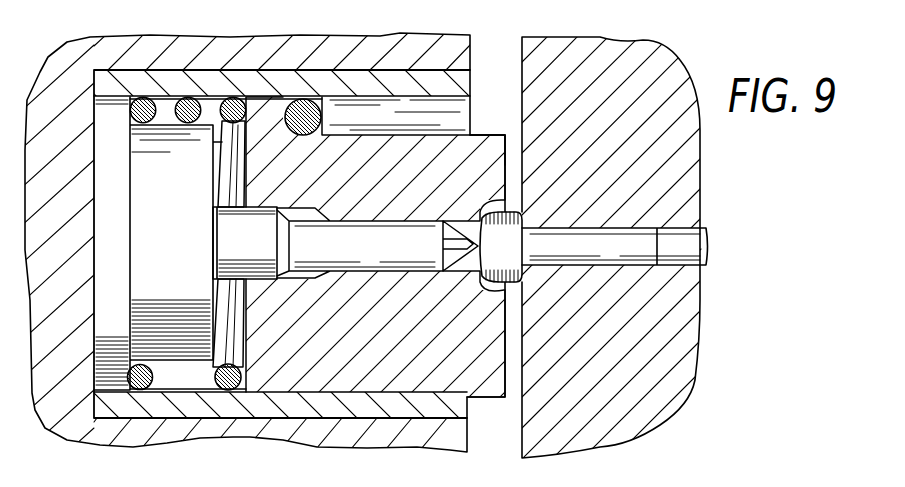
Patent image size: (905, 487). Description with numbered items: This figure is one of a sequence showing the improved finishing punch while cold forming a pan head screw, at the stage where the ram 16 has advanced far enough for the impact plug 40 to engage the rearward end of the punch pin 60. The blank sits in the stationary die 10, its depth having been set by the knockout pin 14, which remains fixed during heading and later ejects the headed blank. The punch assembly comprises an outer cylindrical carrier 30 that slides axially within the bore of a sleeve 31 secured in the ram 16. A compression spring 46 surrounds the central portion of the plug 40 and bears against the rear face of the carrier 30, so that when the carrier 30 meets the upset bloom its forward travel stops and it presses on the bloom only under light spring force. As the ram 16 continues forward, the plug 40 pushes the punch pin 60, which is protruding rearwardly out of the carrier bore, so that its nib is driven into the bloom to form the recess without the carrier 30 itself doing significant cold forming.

The stationary die 10 is at (603, 62).
The knockout pin 14 is at (686, 243).
The ram 16 is at (217, 46).
The carrier 30 is at (480, 373).
The sleeve 31 is at (296, 85).
The impact plug 40 is at (168, 240).
The compression spring 46 is at (227, 357).
The punch pin 60 is at (468, 157).